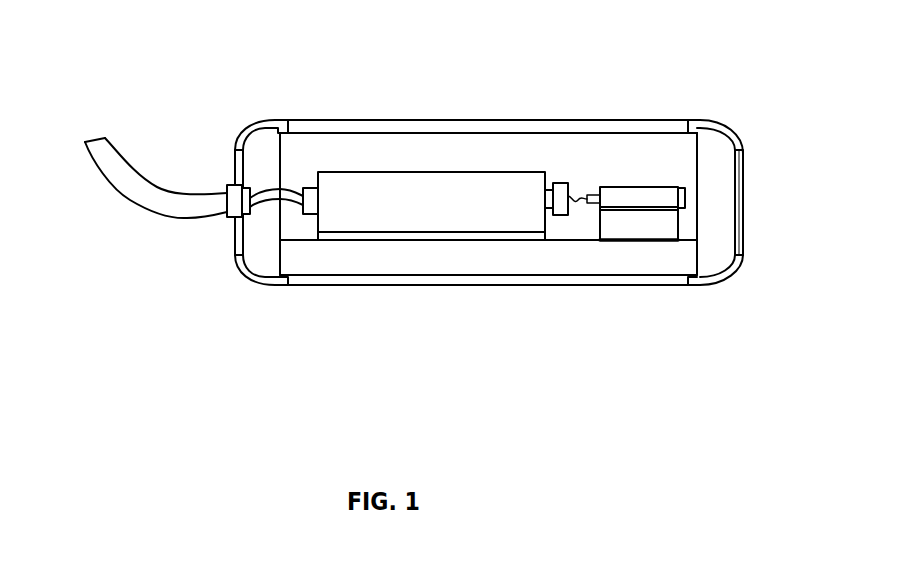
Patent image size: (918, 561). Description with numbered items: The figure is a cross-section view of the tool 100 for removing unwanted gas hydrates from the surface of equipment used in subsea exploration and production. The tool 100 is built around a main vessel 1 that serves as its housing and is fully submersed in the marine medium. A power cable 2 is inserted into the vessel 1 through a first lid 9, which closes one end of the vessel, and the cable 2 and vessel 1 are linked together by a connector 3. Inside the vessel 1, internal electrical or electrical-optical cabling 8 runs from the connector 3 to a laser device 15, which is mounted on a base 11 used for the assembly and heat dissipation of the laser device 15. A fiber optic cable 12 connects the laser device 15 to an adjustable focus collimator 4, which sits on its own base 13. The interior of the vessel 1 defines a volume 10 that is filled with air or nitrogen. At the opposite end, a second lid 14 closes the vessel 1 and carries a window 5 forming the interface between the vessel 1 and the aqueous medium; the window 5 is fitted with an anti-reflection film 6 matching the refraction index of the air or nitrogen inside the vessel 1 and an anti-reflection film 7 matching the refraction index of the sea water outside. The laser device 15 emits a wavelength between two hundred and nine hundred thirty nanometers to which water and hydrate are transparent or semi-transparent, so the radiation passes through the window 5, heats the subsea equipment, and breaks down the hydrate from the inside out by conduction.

The main vessel 1 is at (398, 122).
The power cable 2 is at (145, 200).
The connector 3 is at (233, 197).
The adjustable focus collimator 4 is at (658, 197).
The window 5 is at (740, 190).
The anti-reflection film 6 is at (733, 172).
The anti-reflection film 7 is at (742, 203).
The internal electrical or electrical-optical cabling 8 is at (293, 198).
The first lid 9 is at (263, 283).
The volume V 10 is at (533, 150).
The base for the assembly and dissipation of the laser device 11 is at (497, 257).
The fiber optic cable 12 is at (575, 197).
The base for the assembly of the collimator 13 is at (628, 227).
The second lid 14 is at (720, 275).
The laser device 15 is at (443, 203).
The tool 100 is at (196, 325).